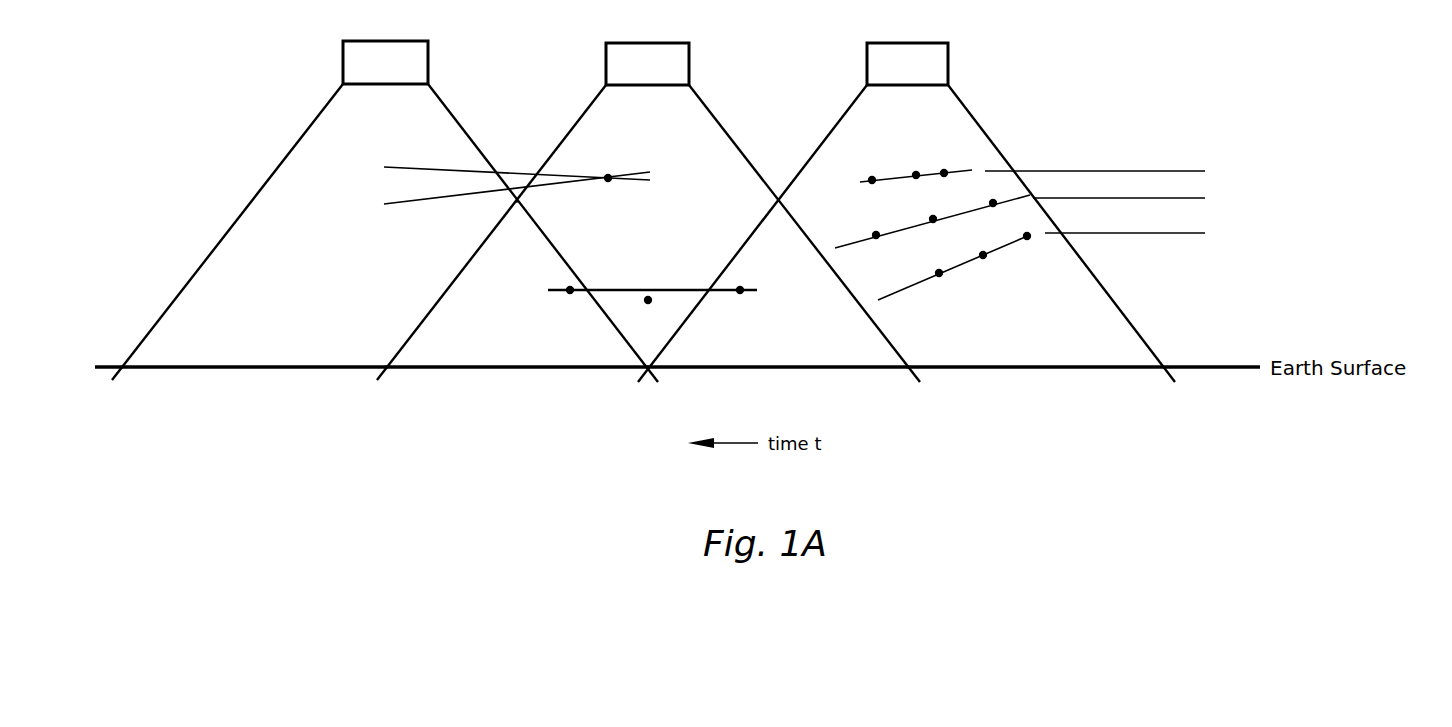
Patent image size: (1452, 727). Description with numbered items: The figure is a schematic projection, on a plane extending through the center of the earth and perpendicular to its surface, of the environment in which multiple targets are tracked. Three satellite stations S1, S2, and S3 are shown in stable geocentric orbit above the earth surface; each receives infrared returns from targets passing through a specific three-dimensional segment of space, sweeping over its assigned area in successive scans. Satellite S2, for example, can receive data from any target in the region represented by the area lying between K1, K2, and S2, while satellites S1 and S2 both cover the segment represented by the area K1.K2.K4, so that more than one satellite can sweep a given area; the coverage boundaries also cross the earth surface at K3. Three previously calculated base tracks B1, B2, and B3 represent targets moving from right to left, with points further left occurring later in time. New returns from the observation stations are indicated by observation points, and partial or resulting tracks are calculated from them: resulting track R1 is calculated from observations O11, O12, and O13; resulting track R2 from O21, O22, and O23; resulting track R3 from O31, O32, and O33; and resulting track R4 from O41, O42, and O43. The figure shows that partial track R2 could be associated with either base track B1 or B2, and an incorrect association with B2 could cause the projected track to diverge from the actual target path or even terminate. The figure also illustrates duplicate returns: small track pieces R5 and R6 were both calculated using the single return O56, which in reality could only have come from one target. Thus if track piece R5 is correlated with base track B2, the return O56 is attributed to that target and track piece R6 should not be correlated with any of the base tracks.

The satellite station S1 is at (385, 211).
The satellite station S2 is at (648, 212).
The satellite station S3 is at (906, 212).
The resulting track R1 is at (925, 221).
The resulting track R2 is at (904, 188).
The resulting track R3 is at (655, 307).
The resulting track R4 is at (954, 278).
The resulting track R5 is at (519, 168).
The resulting track R6 is at (517, 204).
The observation point O11 is at (994, 218).
The observation point O12 is at (934, 234).
The observation point O13 is at (876, 249).
The observation point O21 is at (941, 162).
The observation point O22 is at (916, 190).
The observation point O23 is at (871, 167).
The observation point O31 is at (742, 279).
The observation point O32 is at (644, 315).
The observation point O33 is at (567, 307).
The observation point O41 is at (1044, 246).
The observation point O42 is at (1000, 265).
The observation point O43 is at (956, 283).
The duplicate return O56 is at (603, 192).
The coverage boundary point K1 is at (387, 385).
The coverage boundary point K2 is at (923, 386).
The coverage boundary point K3 is at (663, 386).
The coverage overlap vertex K4 is at (532, 205).
The base track B1 is at (1109, 173).
The base track B2 is at (1133, 200).
The base track B3 is at (1139, 235).